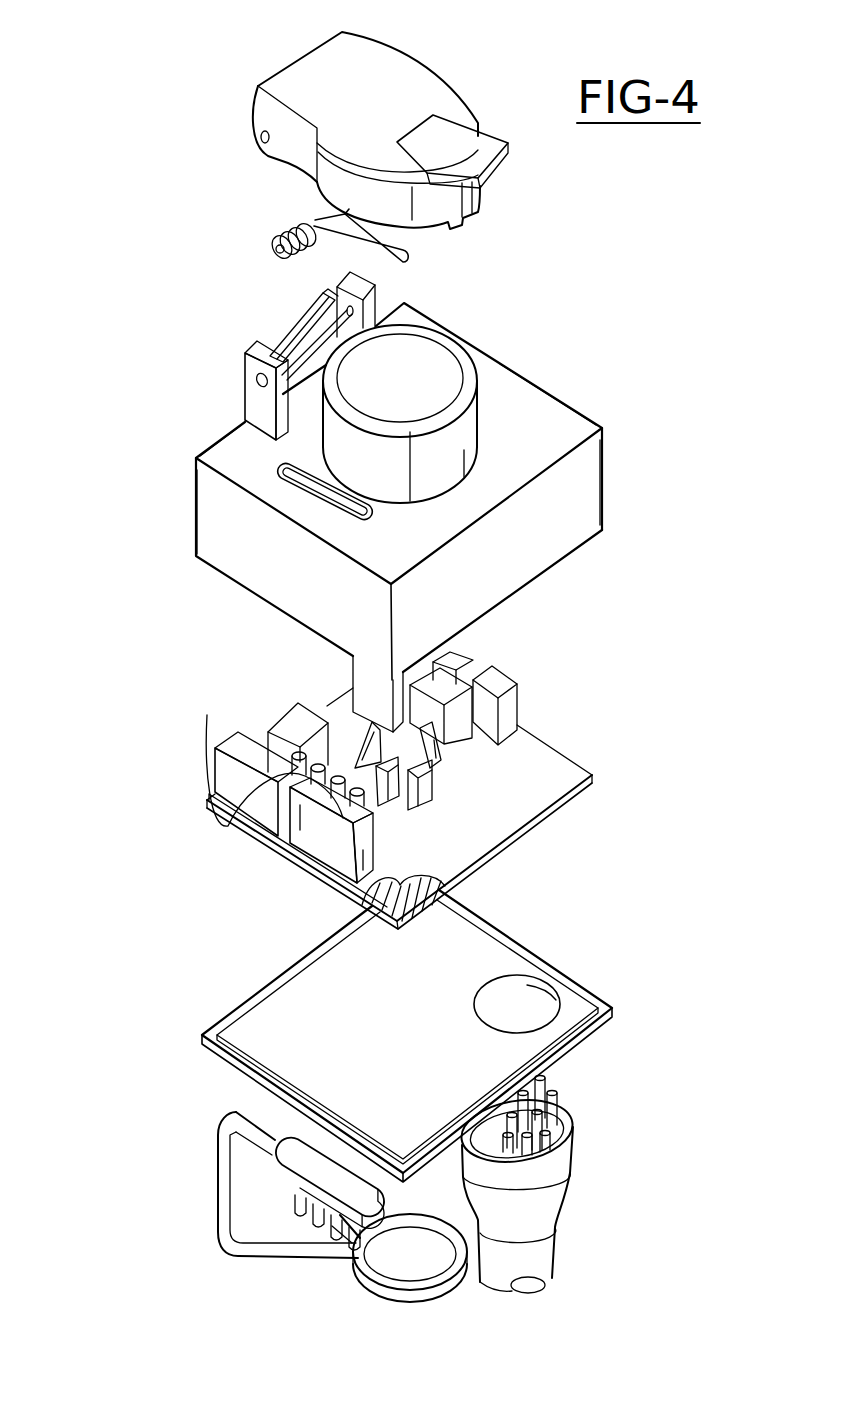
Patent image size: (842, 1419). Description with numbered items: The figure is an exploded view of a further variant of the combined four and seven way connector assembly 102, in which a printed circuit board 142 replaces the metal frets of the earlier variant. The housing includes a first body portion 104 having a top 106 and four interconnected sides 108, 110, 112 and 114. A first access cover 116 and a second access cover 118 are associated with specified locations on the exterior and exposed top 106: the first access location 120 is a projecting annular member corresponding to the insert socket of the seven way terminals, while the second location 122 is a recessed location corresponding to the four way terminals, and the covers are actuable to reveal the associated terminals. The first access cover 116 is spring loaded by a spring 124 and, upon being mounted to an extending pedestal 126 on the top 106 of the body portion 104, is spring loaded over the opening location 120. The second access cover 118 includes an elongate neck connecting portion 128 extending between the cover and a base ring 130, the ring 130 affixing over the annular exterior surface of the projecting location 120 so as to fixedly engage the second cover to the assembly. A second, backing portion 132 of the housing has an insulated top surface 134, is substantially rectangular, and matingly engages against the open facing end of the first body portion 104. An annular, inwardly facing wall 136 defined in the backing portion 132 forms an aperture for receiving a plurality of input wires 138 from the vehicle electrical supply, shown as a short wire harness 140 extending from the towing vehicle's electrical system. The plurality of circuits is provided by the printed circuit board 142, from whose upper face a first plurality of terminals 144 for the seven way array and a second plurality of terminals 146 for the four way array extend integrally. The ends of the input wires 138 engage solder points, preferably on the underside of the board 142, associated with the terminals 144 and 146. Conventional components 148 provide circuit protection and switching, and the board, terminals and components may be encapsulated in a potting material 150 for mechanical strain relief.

The connector assembly 102 is at (640, 364).
The first body portion 104 is at (168, 535).
The top 106 is at (604, 426).
The side 108 is at (207, 554).
The side 110 is at (603, 532).
The side 112 is at (543, 392).
The side 114 is at (200, 452).
The first access cover 116 is at (410, 80).
The second access cover 118 is at (290, 1158).
The first access location 120 is at (425, 357).
The second access location 122 is at (297, 485).
The spring 124 is at (267, 239).
The pedestal 126 is at (245, 348).
The neck connecting portion 128 is at (218, 1243).
The base ring 130 is at (367, 1277).
The backing portion 132 is at (203, 1035).
The insulated top surface 134 is at (272, 1007).
The annular inwardly facing wall 136 is at (533, 990).
The input wires 138 is at (537, 1123).
The wire harness 140 is at (557, 1187).
The printed circuit board 142 is at (574, 778).
The first plurality of terminals 144 is at (437, 793).
The second plurality of terminals 146 is at (256, 822).
The components 148 is at (270, 733).
The potting material 150 is at (467, 880).